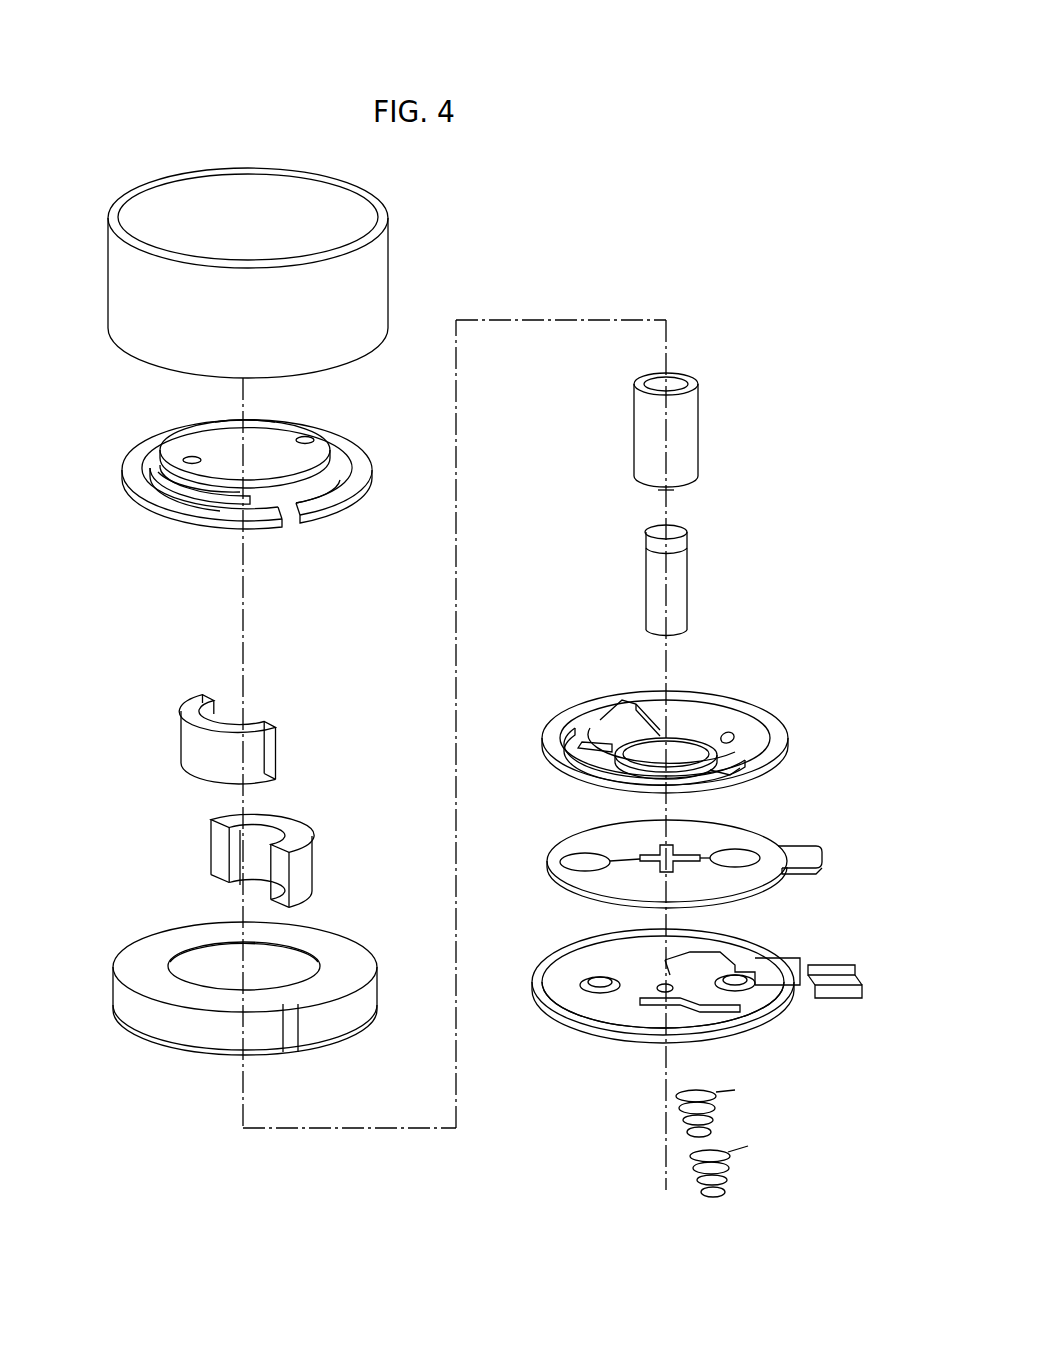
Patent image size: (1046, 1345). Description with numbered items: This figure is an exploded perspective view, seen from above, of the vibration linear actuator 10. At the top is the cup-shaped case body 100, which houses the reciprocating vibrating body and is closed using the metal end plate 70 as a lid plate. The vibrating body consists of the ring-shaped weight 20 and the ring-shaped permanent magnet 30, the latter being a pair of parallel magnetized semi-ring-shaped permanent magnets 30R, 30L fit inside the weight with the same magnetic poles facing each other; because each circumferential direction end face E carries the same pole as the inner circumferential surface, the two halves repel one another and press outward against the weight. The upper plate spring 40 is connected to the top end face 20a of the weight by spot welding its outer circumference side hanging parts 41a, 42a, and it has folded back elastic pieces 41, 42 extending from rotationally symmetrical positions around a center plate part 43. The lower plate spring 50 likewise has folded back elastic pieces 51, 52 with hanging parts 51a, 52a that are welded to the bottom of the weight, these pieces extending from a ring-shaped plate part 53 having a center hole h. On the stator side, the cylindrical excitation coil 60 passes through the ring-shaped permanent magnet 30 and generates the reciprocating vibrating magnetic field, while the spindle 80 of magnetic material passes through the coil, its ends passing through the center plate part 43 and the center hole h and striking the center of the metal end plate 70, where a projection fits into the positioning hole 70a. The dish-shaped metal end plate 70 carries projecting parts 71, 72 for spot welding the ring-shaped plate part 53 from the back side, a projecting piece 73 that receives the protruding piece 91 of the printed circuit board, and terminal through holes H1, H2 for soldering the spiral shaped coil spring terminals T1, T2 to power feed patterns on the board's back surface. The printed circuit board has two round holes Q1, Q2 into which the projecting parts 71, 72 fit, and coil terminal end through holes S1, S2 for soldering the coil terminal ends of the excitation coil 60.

The vibration linear actuator 10 is at (119, 93).
The cup-shaped case body 100 is at (366, 288).
The upper plate spring 40 is at (223, 473).
The folded back elastic piece 41 is at (154, 497).
The outer circumference side hanging part 41a is at (157, 446).
The folded back elastic piece 42 is at (364, 464).
The outer circumference side hanging part 42a is at (320, 502).
The center plate part 43 is at (270, 448).
The ring-shaped permanent magnet 30 is at (309, 801).
The semi-ring-shaped permanent magnet 30L is at (283, 718).
The semi-ring-shaped permanent magnet 30R is at (298, 836).
The circumferential direction end face E is at (222, 700).
The ring-shaped weight 20 is at (206, 982).
The top end face 20a is at (157, 945).
The excitation coil 60 is at (700, 425).
The spindle 80 is at (692, 605).
The lower plate spring 50 is at (679, 715).
The folded back elastic piece 51 is at (548, 738).
The outer circumference side hanging part 51a is at (607, 700).
The folded back elastic piece 52 is at (782, 740).
The outer circumference side hanging part 52a is at (732, 775).
The ring-shaped plate part 53 is at (585, 757).
The coil terminal end through hole S2 is at (600, 760).
The center hole h is at (658, 758).
The protruding piece 91 is at (820, 856).
The round hole Q1 is at (580, 862).
The round hole Q2 is at (737, 858).
The coil terminal end through hole S1 is at (672, 876).
The metal end plate 70 is at (701, 992).
The positioning hole 70a is at (665, 992).
The projecting part 71 is at (598, 982).
The projecting part 72 is at (800, 958).
The projecting piece 73 is at (840, 985).
The terminal through hole H1 is at (720, 1010).
The terminal through hole H2 is at (737, 983).
The spiral shaped coil spring terminal T1 is at (737, 1162).
The spiral shaped coil spring terminal T2 is at (680, 1118).